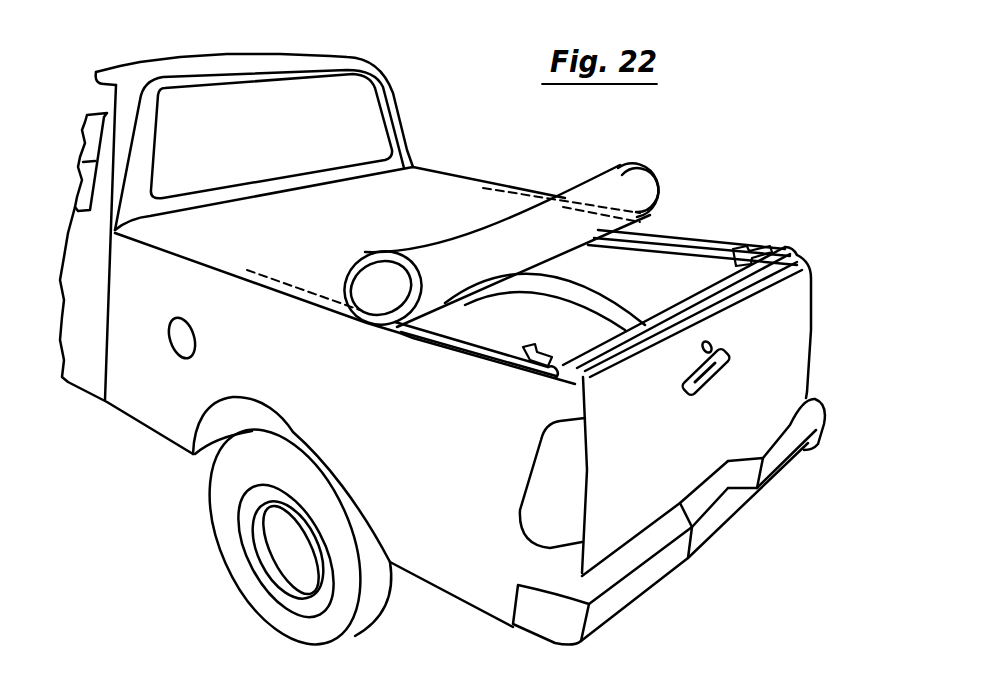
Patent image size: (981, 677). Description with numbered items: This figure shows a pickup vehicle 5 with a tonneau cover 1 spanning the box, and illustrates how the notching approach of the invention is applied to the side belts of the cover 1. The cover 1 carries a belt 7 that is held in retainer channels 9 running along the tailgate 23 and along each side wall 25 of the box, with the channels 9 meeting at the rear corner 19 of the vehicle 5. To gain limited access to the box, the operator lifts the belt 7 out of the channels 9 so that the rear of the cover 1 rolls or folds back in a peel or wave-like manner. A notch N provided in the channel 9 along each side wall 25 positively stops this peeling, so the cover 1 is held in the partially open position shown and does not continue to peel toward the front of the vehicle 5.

The tonneau cover 1 is at (426, 205).
The vehicle 5 is at (185, 394).
The belt 7 is at (363, 243).
The retainer channel 9 is at (722, 237).
The corner 19 is at (538, 400).
The tailgate 23 is at (662, 471).
The side wall 25 is at (503, 183).
The notch N is at (678, 204).